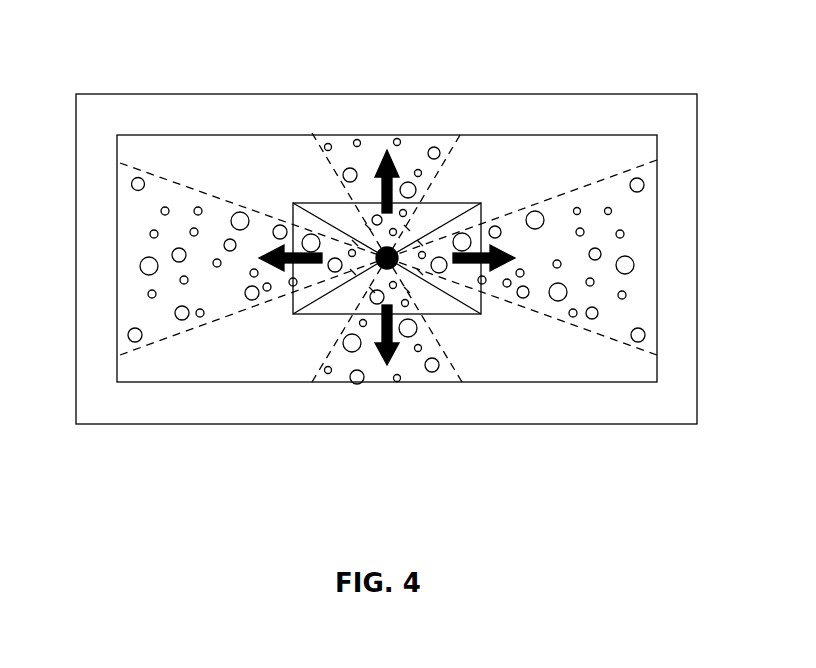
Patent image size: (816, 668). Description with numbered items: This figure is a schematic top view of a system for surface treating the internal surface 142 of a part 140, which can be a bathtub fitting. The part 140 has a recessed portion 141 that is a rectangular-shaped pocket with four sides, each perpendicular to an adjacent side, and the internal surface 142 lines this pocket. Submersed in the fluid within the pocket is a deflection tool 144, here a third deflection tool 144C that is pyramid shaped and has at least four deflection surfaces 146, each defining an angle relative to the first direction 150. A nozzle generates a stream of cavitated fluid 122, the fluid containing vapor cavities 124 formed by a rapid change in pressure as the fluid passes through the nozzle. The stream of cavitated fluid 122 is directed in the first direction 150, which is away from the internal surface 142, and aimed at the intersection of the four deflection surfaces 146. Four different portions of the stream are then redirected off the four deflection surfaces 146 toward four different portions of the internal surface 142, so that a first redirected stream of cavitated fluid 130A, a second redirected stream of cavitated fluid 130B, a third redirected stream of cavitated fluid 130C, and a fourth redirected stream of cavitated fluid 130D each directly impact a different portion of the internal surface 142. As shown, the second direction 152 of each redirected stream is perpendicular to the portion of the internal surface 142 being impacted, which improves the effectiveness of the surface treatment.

The stream of cavitated fluid 122 is at (363, 280).
The vapor cavities 124 is at (622, 234).
The first redirected stream of cavitated fluid 130A is at (179, 337).
The second redirected stream of cavitated fluid 130B is at (466, 147).
The third redirected stream of cavitated fluid 130C is at (455, 350).
The fourth redirected stream of cavitated fluid 130D is at (617, 168).
The part 140 is at (702, 142).
The recessed portion 141 is at (120, 280).
The internal surface 142 is at (120, 190).
The deflection tool 144 is at (291, 165).
The third deflection tool 144C is at (443, 305).
The deflection surfaces 146 is at (450, 212).
The first direction 150 is at (385, 250).
The second direction 152 is at (268, 250).